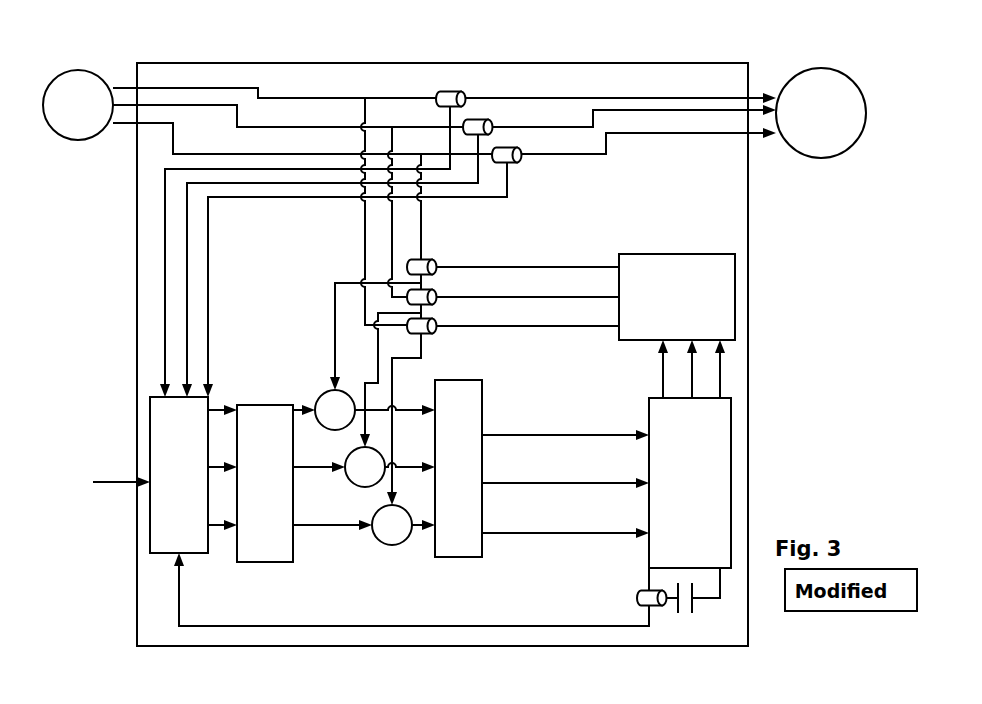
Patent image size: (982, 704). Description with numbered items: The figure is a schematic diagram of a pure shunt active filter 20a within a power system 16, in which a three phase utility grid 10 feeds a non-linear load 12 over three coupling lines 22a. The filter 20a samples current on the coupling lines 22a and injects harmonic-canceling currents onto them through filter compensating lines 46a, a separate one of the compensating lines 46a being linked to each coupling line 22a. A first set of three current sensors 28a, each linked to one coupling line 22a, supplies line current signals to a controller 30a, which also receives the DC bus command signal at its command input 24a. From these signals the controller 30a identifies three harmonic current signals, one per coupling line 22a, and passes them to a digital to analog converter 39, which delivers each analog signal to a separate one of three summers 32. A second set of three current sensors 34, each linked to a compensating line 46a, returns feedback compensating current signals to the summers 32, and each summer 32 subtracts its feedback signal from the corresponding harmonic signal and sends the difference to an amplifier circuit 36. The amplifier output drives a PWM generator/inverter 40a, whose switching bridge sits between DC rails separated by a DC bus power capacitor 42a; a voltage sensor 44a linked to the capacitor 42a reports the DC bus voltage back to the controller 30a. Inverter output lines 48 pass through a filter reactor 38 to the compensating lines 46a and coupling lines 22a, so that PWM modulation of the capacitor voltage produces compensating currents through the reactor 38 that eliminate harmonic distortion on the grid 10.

The 3 phase utility grid 10 is at (85, 70).
The non-linear load 12 is at (810, 68).
The power system 16 is at (778, 330).
The pure shunt active filter 20a is at (267, 63).
The coupling lines 22a is at (705, 133).
The DC voltage reference input 24a is at (120, 483).
The first set of current sensors 28a is at (505, 148).
The controller 30a is at (150, 438).
The first set of summers 32 is at (333, 432).
The second set of current sensors 34 is at (425, 327).
The amplifier circuit 36 is at (472, 557).
The filter reactor 38 is at (735, 285).
The digital to analog converter 39 is at (237, 547).
The PWM generator/inverter 40a is at (731, 498).
The DC bus power capacitor 42a is at (697, 600).
The voltage sensor 44a is at (636, 598).
The filter compensating lines 46a is at (420, 238).
The inverter output lines 48 is at (663, 368).